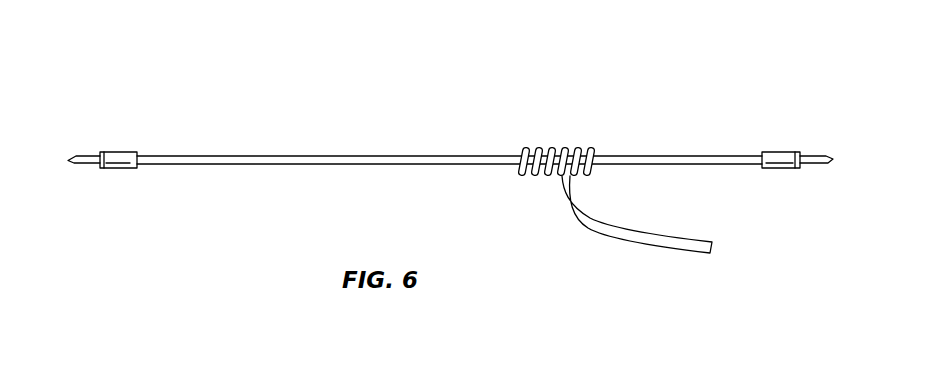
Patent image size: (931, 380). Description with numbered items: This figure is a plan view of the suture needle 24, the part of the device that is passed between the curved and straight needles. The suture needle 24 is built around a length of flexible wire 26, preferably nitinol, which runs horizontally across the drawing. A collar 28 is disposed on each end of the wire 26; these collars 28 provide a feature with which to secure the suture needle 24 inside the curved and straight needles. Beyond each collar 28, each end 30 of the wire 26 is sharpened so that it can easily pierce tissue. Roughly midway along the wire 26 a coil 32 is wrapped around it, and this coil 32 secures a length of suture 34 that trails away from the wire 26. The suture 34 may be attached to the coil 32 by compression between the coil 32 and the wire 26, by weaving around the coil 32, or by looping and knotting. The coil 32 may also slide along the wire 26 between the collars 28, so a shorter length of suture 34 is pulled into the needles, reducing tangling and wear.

The suture needle 24 is at (219, 201).
The flexible wire 26 is at (247, 157).
The collar 28 is at (120, 158).
The end 30 is at (67, 157).
The coil 32 is at (550, 147).
The suture 34 is at (628, 235).